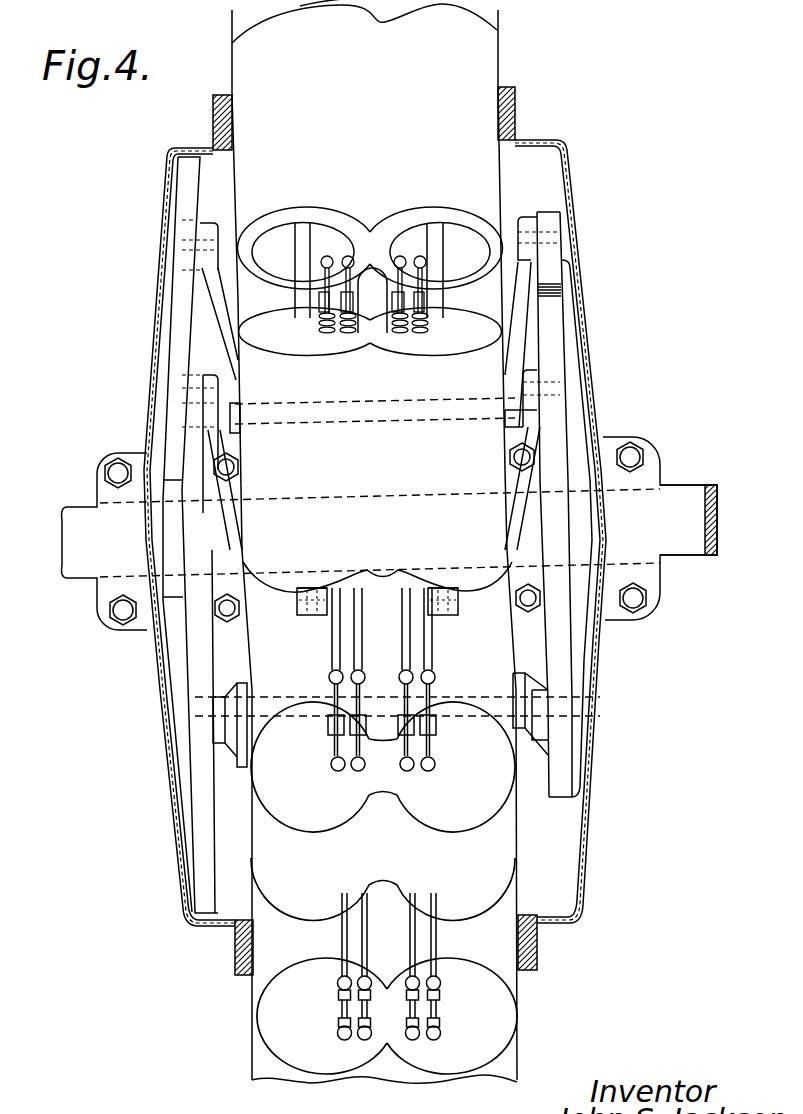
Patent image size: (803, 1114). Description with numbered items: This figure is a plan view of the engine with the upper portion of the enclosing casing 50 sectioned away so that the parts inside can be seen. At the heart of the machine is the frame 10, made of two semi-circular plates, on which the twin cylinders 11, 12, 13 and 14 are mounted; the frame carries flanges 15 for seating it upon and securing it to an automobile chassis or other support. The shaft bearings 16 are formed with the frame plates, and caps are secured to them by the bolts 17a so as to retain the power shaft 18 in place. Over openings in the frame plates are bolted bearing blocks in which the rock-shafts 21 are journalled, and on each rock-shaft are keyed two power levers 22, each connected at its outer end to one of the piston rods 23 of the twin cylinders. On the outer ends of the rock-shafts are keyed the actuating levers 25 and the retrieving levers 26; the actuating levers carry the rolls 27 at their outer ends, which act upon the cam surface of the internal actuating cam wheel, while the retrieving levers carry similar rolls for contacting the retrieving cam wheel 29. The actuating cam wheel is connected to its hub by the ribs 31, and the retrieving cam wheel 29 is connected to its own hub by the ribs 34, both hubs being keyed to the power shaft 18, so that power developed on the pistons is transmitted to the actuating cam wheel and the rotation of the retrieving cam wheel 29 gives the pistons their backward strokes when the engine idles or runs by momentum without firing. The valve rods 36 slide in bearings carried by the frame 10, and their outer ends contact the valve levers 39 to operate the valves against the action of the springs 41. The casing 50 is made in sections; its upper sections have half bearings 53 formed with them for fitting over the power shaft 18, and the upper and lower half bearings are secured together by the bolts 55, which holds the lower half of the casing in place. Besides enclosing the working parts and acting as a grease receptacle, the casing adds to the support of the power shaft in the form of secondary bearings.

The frame of the engine 10 is at (238, 297).
The twin cylinder 11 is at (497, 1012).
The twin cylinder 12 is at (525, 347).
The twin cylinder 13 is at (492, 62).
The twin cylinder 14 is at (505, 852).
The flanges 15 is at (497, 18).
The shaft bearings 16 is at (217, 547).
The bolts 17a is at (240, 468).
The power shaft 18 is at (715, 548).
The rock-shafts 21 is at (393, 588).
The power levers 22 is at (300, 610).
The piston rods 23 is at (295, 250).
The actuating levers 25 is at (210, 313).
The retrieving levers 26 is at (503, 368).
The rolls 27 is at (183, 356).
The retrieving cam wheel 29 is at (572, 667).
The ribs 31 is at (168, 388).
The ribs 34 is at (585, 418).
The valve rods 36 is at (425, 632).
The valve levers 39 is at (412, 285).
The springs 41 is at (415, 333).
The casing 50 is at (162, 282).
The half bearings 53 is at (100, 590).
The bolts 55 is at (102, 476).